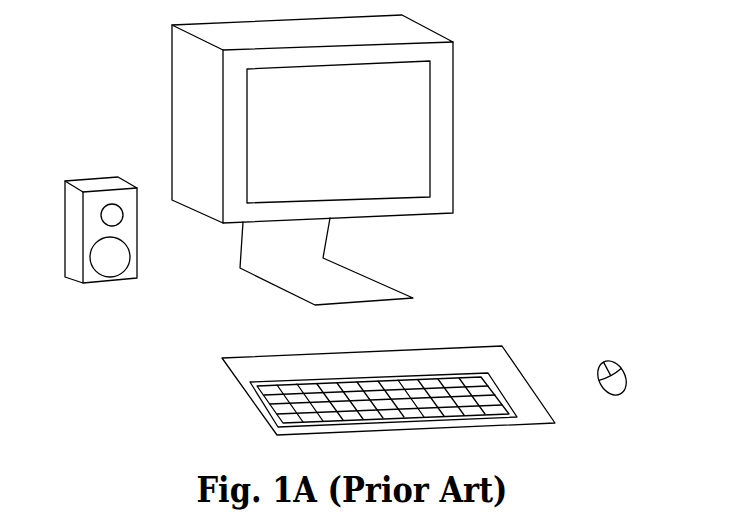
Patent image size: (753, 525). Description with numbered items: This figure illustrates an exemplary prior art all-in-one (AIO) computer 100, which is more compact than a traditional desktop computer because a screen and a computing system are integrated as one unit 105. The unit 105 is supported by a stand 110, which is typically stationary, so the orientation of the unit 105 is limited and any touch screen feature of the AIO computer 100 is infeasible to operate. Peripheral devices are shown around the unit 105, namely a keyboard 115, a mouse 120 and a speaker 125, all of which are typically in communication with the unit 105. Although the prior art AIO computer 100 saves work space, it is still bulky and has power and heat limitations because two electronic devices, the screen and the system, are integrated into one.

The prior art AIO computer 100 is at (617, 57).
The unit 105 is at (455, 125).
The stand 110 is at (392, 283).
The keyboard 115 is at (555, 423).
The mouse 120 is at (607, 362).
The speaker 125 is at (90, 283).